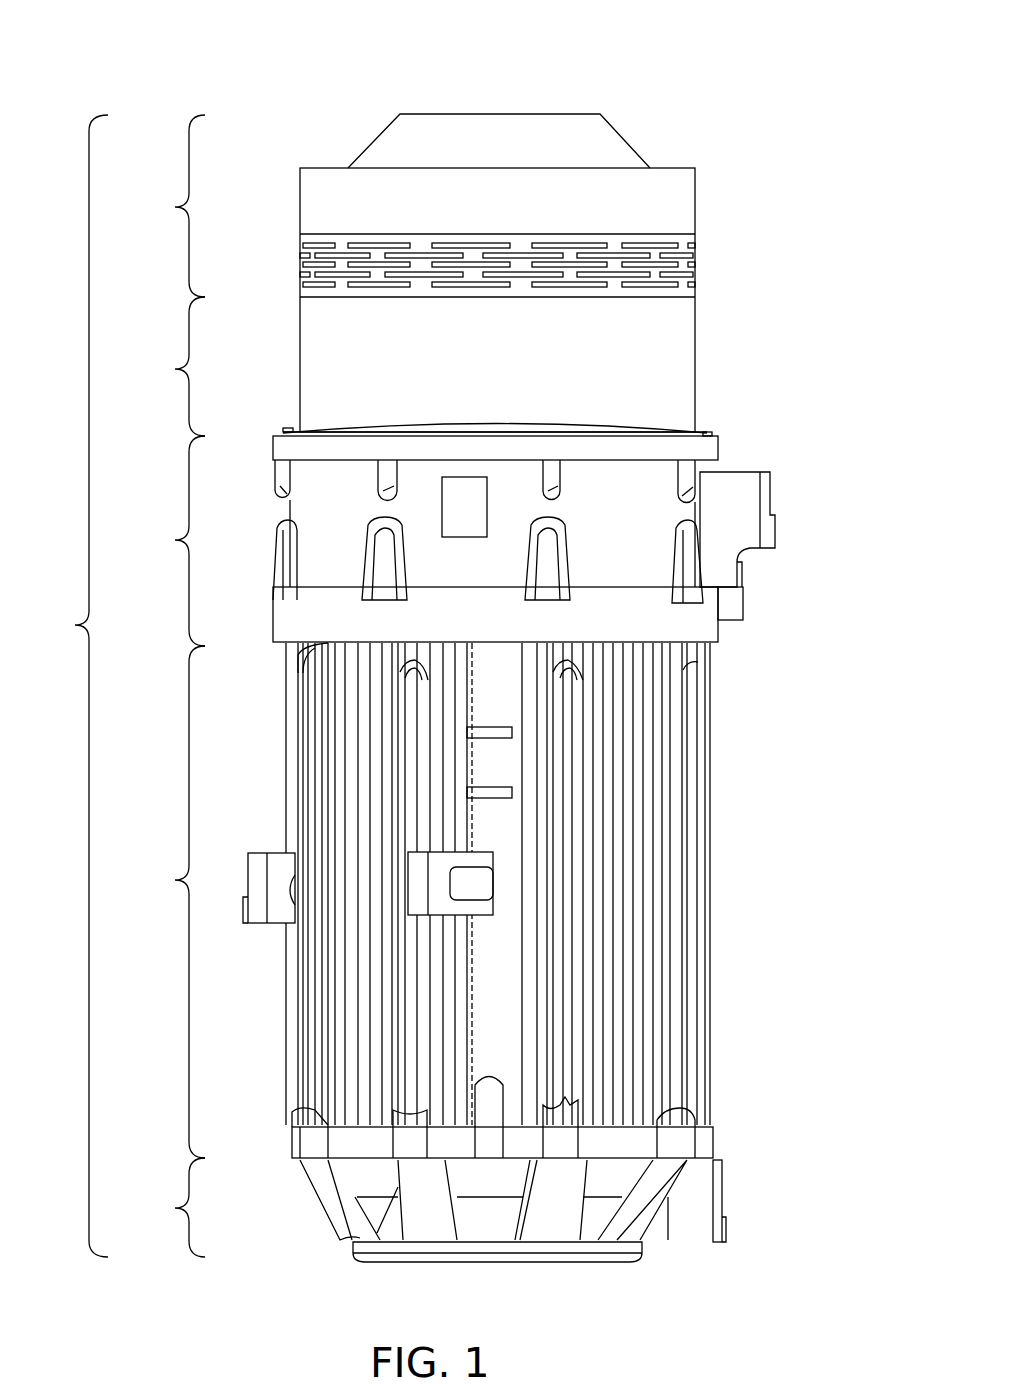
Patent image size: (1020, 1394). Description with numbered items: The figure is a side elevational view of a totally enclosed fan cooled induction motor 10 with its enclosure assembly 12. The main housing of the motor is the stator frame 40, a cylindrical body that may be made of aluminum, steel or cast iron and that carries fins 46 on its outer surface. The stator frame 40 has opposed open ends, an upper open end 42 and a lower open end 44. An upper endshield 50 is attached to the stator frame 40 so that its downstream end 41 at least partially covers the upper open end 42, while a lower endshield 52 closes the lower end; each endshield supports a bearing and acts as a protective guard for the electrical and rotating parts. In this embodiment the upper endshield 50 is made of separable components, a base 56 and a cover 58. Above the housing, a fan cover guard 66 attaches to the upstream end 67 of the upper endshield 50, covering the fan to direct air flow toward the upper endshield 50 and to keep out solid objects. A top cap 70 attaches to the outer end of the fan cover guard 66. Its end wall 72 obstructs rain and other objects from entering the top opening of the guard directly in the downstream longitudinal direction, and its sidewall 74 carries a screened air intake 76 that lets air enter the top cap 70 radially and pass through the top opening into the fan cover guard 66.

The TEFC induction motor 10 is at (303, 45).
The enclosure assembly 12 is at (74, 686).
The stator frame 40 is at (172, 902).
The downstream end 41 is at (493, 632).
The upper open end 42 is at (630, 650).
The lower open end 44 is at (636, 1146).
The fins 46 is at (682, 832).
The upper endshield 50 is at (172, 541).
The lower endshield 52 is at (171, 1207).
The base 56 is at (647, 551).
The cover 58 is at (718, 441).
The fan cover guard 66 is at (172, 366).
The upstream end 67 is at (447, 408).
The top cap 70 is at (172, 206).
The end wall 72 is at (543, 114).
The sidewall 74 is at (300, 197).
The screened air intake 76 is at (643, 212).